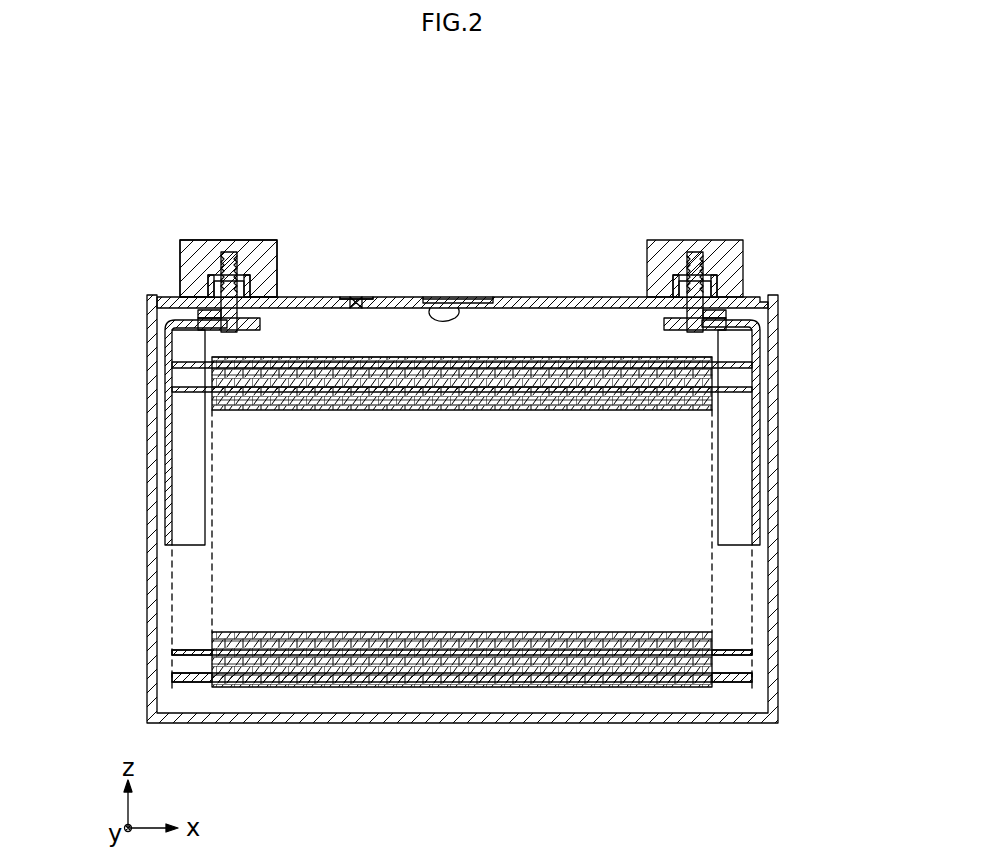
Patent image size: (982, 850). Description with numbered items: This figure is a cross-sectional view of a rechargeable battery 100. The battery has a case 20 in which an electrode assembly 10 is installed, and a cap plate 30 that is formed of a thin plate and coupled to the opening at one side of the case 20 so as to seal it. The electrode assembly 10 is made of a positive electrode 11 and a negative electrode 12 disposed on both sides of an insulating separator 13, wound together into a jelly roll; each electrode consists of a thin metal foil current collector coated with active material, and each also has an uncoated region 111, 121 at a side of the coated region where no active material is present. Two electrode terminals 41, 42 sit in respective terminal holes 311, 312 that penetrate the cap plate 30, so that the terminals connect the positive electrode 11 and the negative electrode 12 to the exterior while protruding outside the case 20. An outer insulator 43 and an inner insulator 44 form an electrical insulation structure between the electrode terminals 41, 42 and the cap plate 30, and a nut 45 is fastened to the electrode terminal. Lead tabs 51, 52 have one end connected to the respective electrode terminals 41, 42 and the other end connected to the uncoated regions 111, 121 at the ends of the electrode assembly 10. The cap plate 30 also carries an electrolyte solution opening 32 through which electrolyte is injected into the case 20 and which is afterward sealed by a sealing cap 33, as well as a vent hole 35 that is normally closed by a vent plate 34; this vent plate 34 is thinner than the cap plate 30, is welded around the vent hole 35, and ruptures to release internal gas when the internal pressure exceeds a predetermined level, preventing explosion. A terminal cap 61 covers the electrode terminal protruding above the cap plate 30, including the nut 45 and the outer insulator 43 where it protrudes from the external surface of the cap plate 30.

The rechargeable battery 100 is at (485, 114).
The electrode assembly 10 is at (464, 576).
The positive electrode 11 is at (302, 687).
The negative electrode 12 is at (360, 682).
The separator 13 is at (468, 655).
The uncoated region 111 is at (186, 685).
The uncoated region 121 is at (740, 683).
The case 20 is at (622, 723).
The cap plate 30 is at (540, 297).
The electrolyte solution opening 32 is at (365, 297).
The sealing cap 33 is at (352, 297).
The vent plate 34 is at (470, 297).
The vent hole 35 is at (446, 308).
The electrode terminal 41 is at (228, 252).
The electrode terminal 42 is at (696, 252).
The outer insulator 43 is at (192, 250).
The inner insulator 44 is at (206, 312).
The nut 45 is at (718, 300).
The lead tab 51 is at (150, 364).
The lead tab 52 is at (775, 361).
The terminal cap 61 is at (255, 240).
The terminal hole 311 is at (252, 285).
The terminal hole 312 is at (672, 285).